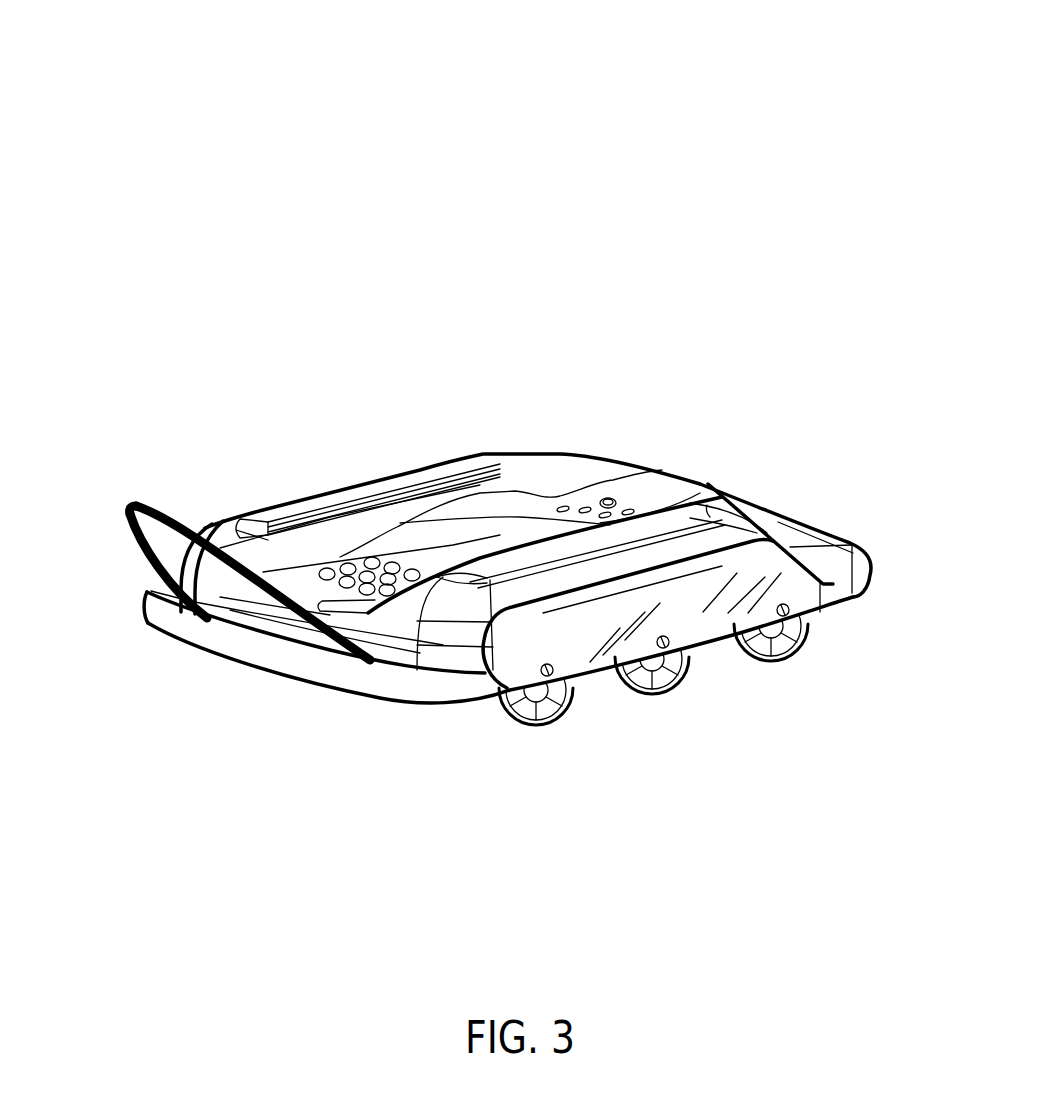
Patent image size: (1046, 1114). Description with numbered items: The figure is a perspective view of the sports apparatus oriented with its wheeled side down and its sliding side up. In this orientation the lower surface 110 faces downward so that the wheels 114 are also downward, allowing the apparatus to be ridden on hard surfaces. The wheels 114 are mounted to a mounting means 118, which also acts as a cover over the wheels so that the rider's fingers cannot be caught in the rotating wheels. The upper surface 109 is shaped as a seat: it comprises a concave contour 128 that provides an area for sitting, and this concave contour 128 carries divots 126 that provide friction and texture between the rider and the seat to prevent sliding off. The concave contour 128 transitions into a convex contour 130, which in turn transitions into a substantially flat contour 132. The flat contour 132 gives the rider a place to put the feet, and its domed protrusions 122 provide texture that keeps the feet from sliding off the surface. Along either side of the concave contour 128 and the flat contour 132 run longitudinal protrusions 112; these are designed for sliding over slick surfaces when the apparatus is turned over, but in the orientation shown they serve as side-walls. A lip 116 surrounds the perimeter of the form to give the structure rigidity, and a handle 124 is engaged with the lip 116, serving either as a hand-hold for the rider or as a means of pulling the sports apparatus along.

The upper surface 109 is at (471, 460).
The lower surface 110 is at (503, 546).
The longitudinal protrusions 112 is at (453, 470).
The wheels 114 is at (520, 713).
The lip 116 is at (853, 595).
The mounting means 118 is at (596, 662).
The domed protrusions 122 is at (372, 567).
The handle 124 is at (140, 505).
The divots 126 is at (607, 499).
The concave contour 128 is at (585, 494).
The convex contour 130 is at (508, 503).
The flat contour 132 is at (316, 460).